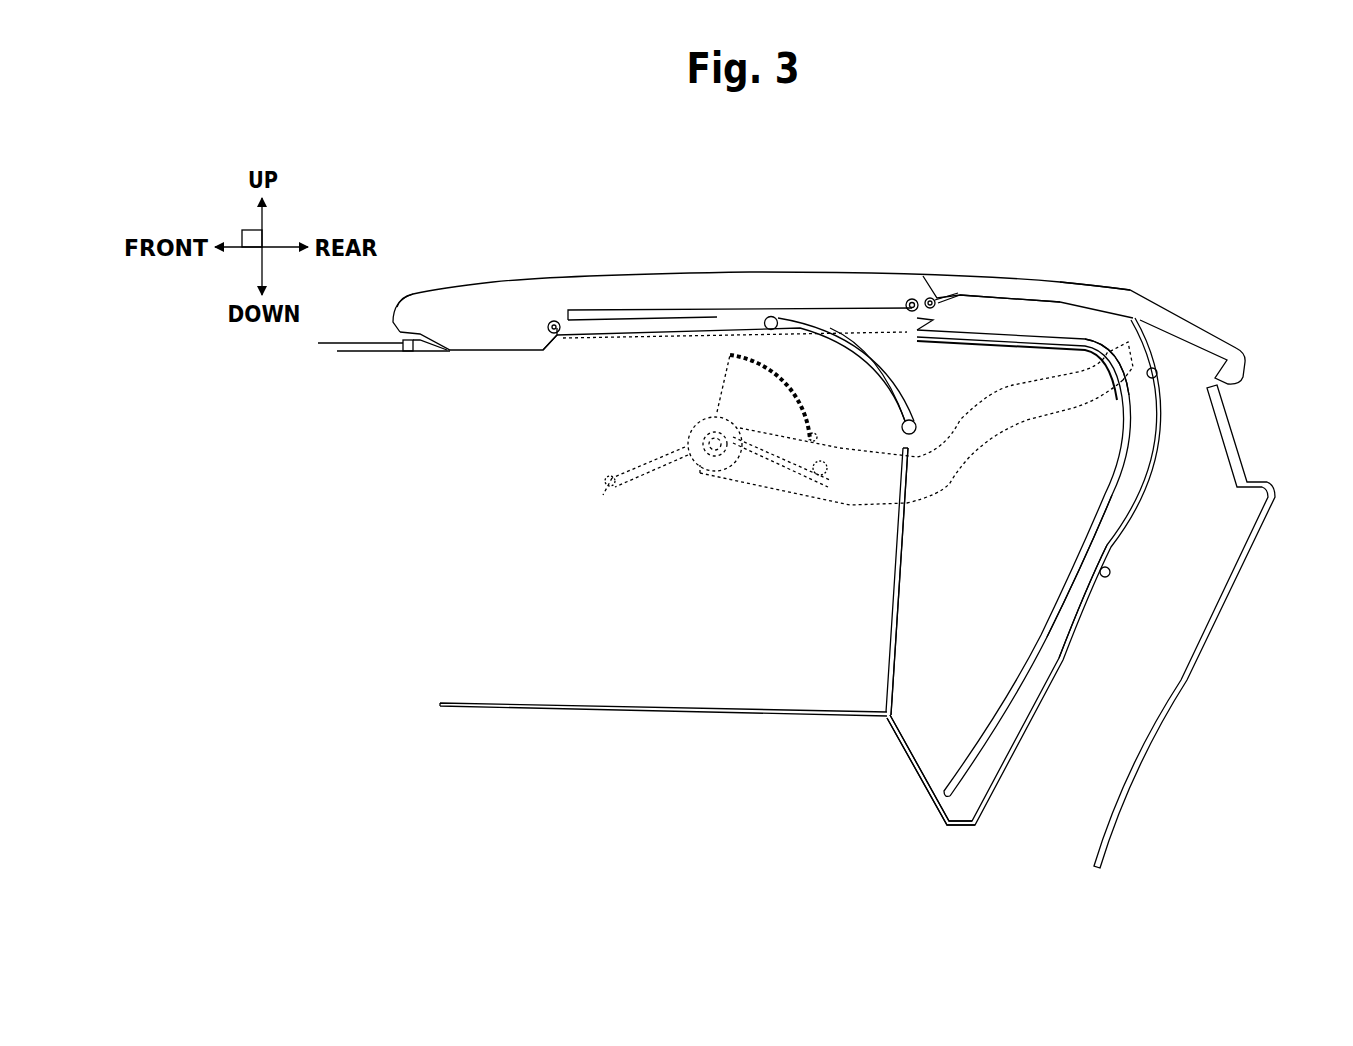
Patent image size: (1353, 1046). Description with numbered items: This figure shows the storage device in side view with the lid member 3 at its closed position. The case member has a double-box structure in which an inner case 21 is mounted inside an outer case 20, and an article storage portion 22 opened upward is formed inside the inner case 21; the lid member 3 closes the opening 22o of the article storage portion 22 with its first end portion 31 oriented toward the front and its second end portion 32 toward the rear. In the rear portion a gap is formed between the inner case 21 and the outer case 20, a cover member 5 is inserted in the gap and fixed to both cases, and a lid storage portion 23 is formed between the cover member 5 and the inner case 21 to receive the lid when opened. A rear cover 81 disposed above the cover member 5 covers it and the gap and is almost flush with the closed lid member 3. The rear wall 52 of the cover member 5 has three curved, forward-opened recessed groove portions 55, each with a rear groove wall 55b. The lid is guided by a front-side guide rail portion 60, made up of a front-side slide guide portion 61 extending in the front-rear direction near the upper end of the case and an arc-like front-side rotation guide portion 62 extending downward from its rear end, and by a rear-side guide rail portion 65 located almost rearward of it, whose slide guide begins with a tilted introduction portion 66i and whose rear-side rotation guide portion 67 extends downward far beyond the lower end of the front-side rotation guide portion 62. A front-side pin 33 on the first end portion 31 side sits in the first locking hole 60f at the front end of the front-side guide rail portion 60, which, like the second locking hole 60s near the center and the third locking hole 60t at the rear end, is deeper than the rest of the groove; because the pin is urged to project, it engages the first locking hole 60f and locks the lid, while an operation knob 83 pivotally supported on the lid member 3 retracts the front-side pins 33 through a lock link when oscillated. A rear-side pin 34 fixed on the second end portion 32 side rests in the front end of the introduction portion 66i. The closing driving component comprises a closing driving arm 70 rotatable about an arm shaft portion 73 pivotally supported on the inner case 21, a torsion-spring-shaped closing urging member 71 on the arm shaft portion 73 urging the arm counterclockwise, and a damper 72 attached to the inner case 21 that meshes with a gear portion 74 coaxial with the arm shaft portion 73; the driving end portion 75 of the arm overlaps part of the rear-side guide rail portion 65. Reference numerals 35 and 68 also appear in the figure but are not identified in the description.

The lid member 3 is at (427, 307).
The cover member 5 is at (912, 770).
The outer case 20 is at (1192, 690).
The inner case 21 is at (695, 715).
The article storage portion 22 is at (842, 650).
The opening 22o is at (672, 333).
The lid storage portion 23 is at (927, 650).
The first end portion 31 is at (405, 300).
The second end portion 32 is at (912, 299).
The front-side pin 33 is at (555, 318).
The rear-side pin 34 is at (908, 318).
The pin 35 is at (930, 298).
The rear wall 52 is at (1090, 612).
The recessed groove portion 55 is at (1155, 370).
The rear groove wall 55b is at (1110, 574).
The front-side guide rail portion 60 is at (717, 315).
The first locking hole 60f is at (545, 350).
The second locking hole 60s is at (772, 316).
The third locking hole 60t is at (916, 425).
The front-side slide guide portion 61 is at (602, 316).
The front-side rotation guide portion 62 is at (877, 347).
The rear-side guide rail portion 65 is at (1118, 480).
The introduction portion 66i is at (1022, 327).
The rear-side rotation guide portion 67 is at (1081, 546).
The reinforcement 68 is at (1042, 297).
The closing driving arm 70 is at (808, 490).
The closing urging member 71 is at (648, 474).
The damper 72 is at (820, 437).
The arm shaft portion 73 is at (715, 452).
The gear portion 74 is at (782, 378).
The driving end portion 75 is at (1112, 345).
The rear cover 81 is at (1085, 282).
The operation knob 83 is at (417, 353).